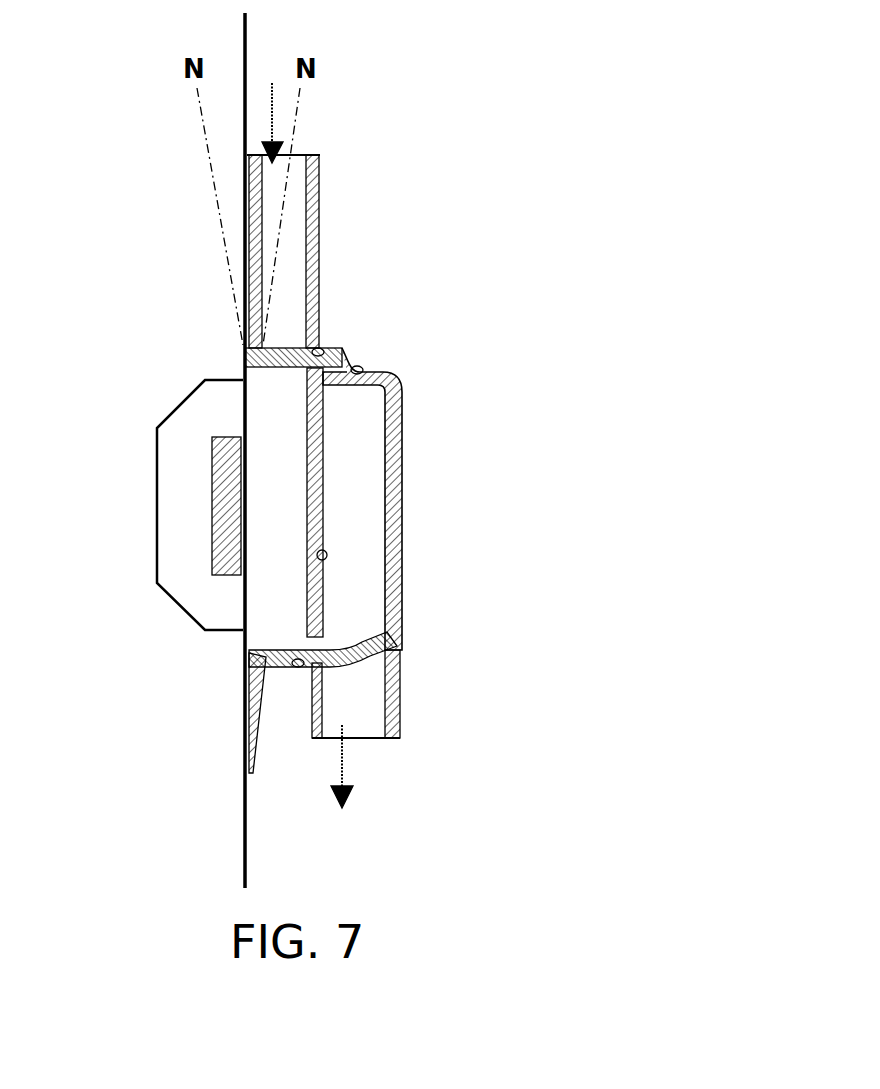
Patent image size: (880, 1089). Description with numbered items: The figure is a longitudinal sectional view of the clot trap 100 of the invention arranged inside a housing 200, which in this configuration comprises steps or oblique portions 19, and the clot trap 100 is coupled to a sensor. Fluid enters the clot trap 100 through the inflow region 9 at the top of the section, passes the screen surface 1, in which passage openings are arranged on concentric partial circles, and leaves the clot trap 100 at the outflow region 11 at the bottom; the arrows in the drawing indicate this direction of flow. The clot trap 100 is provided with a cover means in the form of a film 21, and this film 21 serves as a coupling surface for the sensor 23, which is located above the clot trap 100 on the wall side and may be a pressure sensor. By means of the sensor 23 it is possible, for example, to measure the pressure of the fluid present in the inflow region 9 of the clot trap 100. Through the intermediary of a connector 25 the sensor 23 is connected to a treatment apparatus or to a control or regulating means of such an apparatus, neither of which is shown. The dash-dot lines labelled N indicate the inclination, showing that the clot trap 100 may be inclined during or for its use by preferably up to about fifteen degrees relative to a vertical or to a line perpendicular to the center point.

The screen surface 1 is at (400, 643).
The inflow region 9 is at (293, 263).
The outflow region 11 is at (357, 678).
The steps or oblique portions 19 is at (318, 350).
The film 21 is at (245, 356).
The sensor 23 is at (227, 560).
The connector 25 is at (200, 410).
The clot trap 100 is at (332, 352).
The housing 200 is at (247, 732).